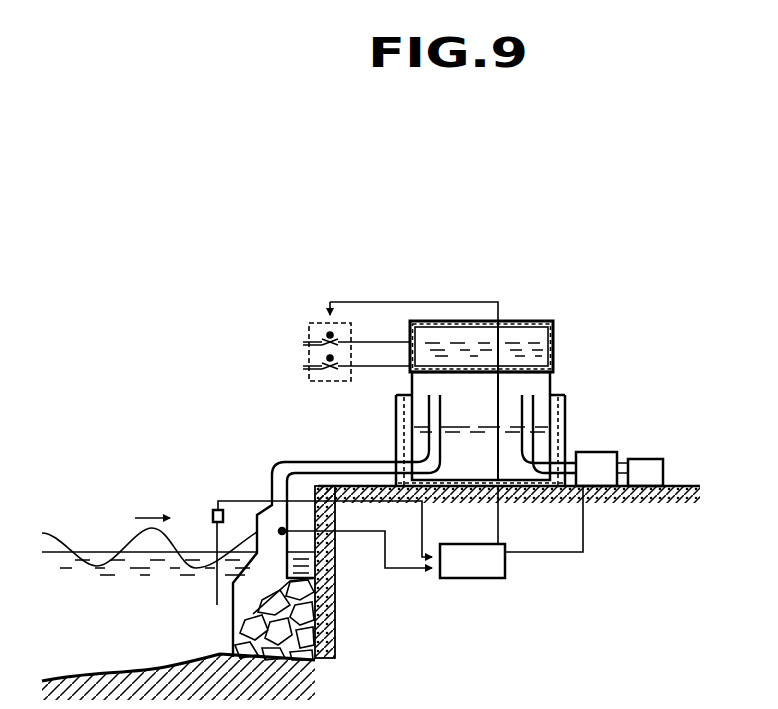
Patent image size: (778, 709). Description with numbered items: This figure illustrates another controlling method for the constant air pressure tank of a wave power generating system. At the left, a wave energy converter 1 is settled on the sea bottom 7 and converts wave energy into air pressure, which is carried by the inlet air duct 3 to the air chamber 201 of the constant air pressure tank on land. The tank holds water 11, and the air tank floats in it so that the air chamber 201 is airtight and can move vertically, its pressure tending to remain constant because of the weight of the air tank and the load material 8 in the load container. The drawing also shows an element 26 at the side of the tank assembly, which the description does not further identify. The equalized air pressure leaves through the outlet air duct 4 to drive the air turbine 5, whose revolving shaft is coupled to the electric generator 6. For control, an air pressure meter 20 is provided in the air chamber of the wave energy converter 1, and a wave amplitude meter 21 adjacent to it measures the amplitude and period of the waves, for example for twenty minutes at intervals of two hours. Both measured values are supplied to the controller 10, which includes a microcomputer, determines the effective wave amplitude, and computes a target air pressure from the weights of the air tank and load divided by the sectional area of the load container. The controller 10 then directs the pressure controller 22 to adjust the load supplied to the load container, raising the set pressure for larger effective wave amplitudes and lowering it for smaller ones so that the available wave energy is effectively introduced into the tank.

The wave energy converter 1 is at (253, 582).
The inlet air duct 3 is at (325, 462).
The outlet air duct 4 is at (523, 451).
The air turbine 5 is at (604, 458).
The electric generator 6 is at (650, 465).
The sea bottom 7 is at (236, 643).
The load material 8 is at (530, 340).
The controller 10 is at (468, 578).
The water 11 is at (459, 420).
The air pressure meter 20 is at (282, 528).
The wave amplitude meter 21 is at (213, 510).
The pressure controller 22 is at (327, 332).
The heat insulating jacket 26 is at (565, 420).
The air chamber 201 is at (457, 388).